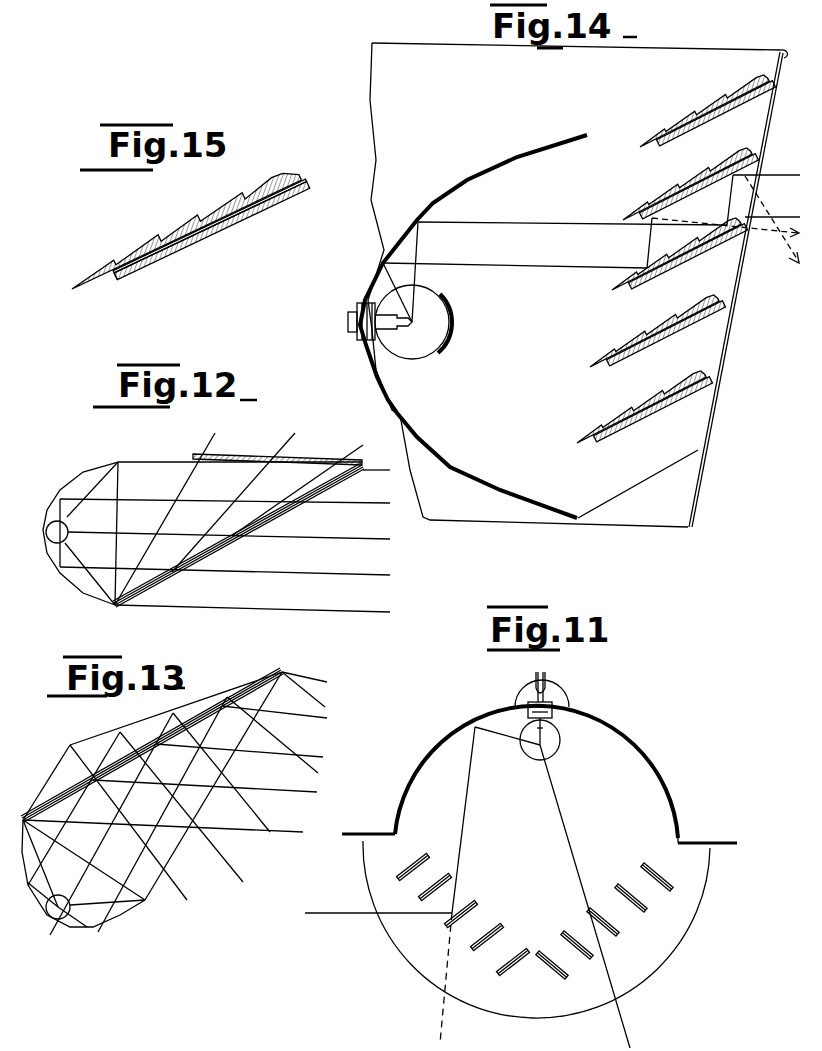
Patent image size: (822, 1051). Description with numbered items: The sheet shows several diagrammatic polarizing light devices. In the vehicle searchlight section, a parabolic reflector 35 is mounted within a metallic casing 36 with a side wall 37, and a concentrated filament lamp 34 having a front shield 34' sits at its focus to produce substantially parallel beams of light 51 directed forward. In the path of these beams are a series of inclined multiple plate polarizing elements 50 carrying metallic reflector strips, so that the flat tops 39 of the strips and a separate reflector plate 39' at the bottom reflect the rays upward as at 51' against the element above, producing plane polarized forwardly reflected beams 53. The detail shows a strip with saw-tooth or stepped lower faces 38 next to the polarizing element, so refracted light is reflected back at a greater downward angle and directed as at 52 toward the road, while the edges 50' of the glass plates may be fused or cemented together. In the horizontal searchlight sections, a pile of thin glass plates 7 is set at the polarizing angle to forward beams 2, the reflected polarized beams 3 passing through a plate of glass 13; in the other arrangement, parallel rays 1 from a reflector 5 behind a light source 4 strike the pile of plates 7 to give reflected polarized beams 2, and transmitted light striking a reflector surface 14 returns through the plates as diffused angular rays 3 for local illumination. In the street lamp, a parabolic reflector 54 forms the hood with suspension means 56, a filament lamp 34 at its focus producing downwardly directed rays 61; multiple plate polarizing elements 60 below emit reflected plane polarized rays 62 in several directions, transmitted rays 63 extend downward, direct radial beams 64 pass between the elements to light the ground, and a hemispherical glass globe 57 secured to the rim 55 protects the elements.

In FIG. 12, the parallel rays of light 1 is at (80, 510).
In FIG. 13, the parallel rays of light 1 is at (97, 840).
In FIG. 12, the forwardly directed light beams 2 is at (385, 475).
In FIG. 13, the forwardly directed light beams 2 is at (290, 705).
In FIG. 12, the reflected beams of light 3 is at (248, 438).
In FIG. 13, the reflected beams of light 3 is at (318, 702).
In FIG. 12, the light source 4 is at (47, 542).
In FIG. 13, the light source 4 is at (58, 918).
In FIG. 12, the reflector 5 is at (85, 470).
In FIG. 13, the reflector 5 is at (104, 925).
In FIG. 12, the multiple plate of thin glass 7 is at (215, 555).
In FIG. 13, the multiple plate of thin glass 7 is at (152, 745).
In FIG. 12, the plate of glass 13 is at (210, 455).
In FIG. 13, the reflector surface 14 is at (127, 724).
In FIG. 14, the concentrated filament lamp 34 is at (398, 337).
In FIG. 11, the concentrated filament lamp 34 is at (561, 740).
In FIG. 14, the front shield 34' is at (465, 323).
In FIG. 14, the parabolic reflector 35 is at (458, 184).
In FIG. 14, the metallic casing 36 is at (485, 48).
In FIG. 14, the housing side wall 37 is at (773, 115).
In FIG. 15, the saw-tooth or stepped lower faces 38 is at (263, 208).
In FIG. 14, the reflector strips 39 is at (671, 258).
In FIG. 15, the reflector strips 39 is at (176, 212).
In FIG. 14, the separate reflector plate 39' is at (635, 484).
In FIG. 14, the multiple plate polarizing elements 50 is at (682, 261).
In FIG. 15, the multiple plate polarizing elements 50 is at (223, 253).
In FIG. 15, the edges of the glass plates 50' is at (96, 304).
In FIG. 14, the parallel beams of light 51 is at (555, 260).
In FIG. 14, the upwardly reflected light rays 51' is at (673, 221).
In FIG. 14, the downwardly directed beams 52 is at (763, 233).
In FIG. 14, the forwardly reflected beams of light 53 is at (727, 192).
In FIG. 11, the parabolic reflector 54 is at (660, 769).
In FIG. 11, the rim 55 is at (736, 843).
In FIG. 11, the suspension means 56 is at (552, 675).
In FIG. 11, the hemispherical glass globe 57 is at (683, 936).
In FIG. 11, the multiple plate polarizing elements 60 is at (639, 912).
In FIG. 11, the downwardly directed rays 61 is at (465, 845).
In FIG. 11, the reflected plane polarized rays 62 is at (334, 903).
In FIG. 11, the transmitted rays 63 is at (445, 1030).
In FIG. 11, the direct radial beams of light 64 is at (626, 1010).